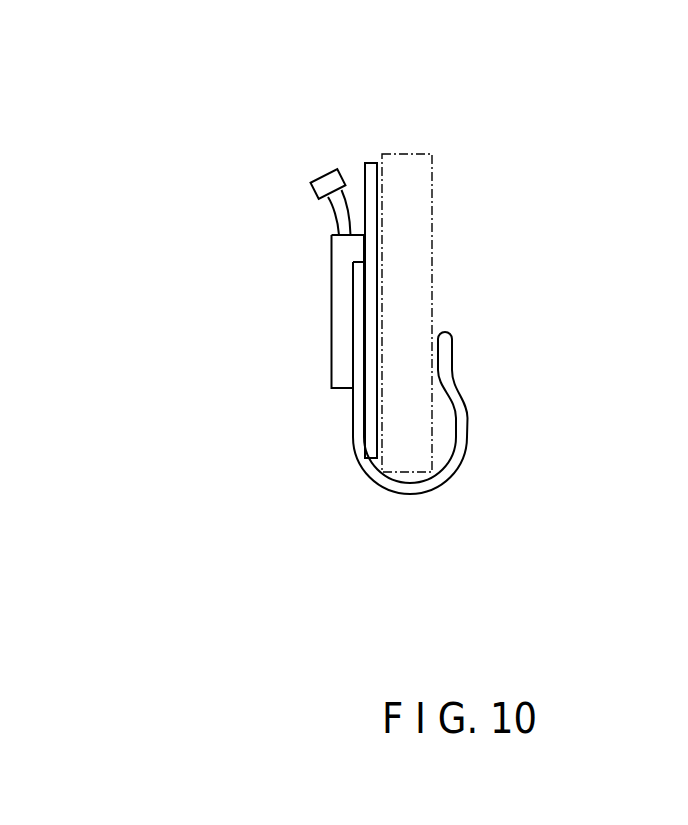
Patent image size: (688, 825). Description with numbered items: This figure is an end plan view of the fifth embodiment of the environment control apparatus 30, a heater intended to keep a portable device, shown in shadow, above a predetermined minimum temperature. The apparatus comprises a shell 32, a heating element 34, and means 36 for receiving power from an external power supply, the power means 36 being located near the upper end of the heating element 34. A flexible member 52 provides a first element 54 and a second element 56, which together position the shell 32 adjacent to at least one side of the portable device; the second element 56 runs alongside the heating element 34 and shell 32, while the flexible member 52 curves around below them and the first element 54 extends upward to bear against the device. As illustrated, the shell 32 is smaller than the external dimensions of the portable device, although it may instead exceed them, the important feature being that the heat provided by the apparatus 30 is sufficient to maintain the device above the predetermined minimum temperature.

The environment control apparatus 30 is at (192, 160).
The shell 32 is at (372, 163).
The heating element 34 is at (332, 265).
The means for receiving power 36 is at (320, 173).
The flexible member 52 is at (415, 493).
The first element 54 is at (457, 382).
The second element 56 is at (352, 435).